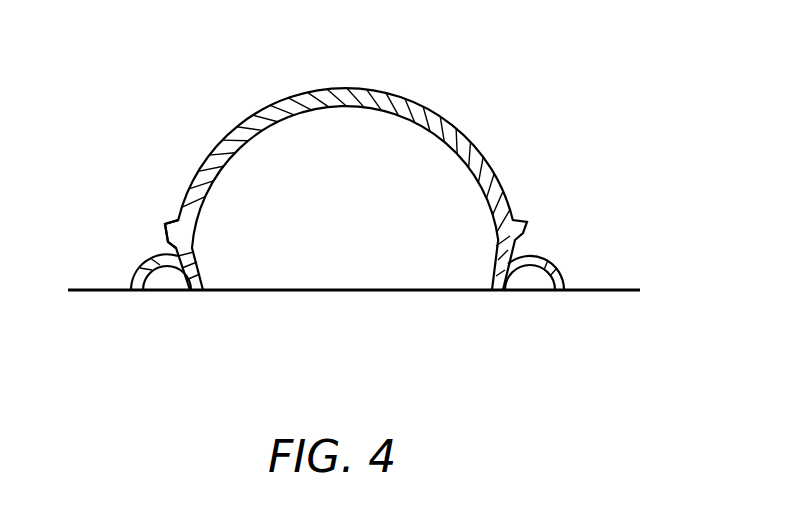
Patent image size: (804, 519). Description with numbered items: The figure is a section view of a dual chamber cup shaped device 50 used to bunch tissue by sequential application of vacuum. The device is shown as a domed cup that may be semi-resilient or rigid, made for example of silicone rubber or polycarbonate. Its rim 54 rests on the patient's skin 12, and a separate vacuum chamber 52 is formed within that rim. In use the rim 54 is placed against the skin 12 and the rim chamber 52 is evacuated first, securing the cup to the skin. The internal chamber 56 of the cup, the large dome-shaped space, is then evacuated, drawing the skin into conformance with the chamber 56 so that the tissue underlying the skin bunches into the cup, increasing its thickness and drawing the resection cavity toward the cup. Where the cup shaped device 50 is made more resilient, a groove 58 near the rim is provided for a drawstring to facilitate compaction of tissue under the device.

The patient's skin 12 is at (607, 289).
The cup shaped device 50 is at (348, 160).
The vacuum chamber 52 is at (530, 282).
The rim 54 is at (136, 258).
The internal chamber 56 is at (352, 142).
The groove 58 is at (168, 245).